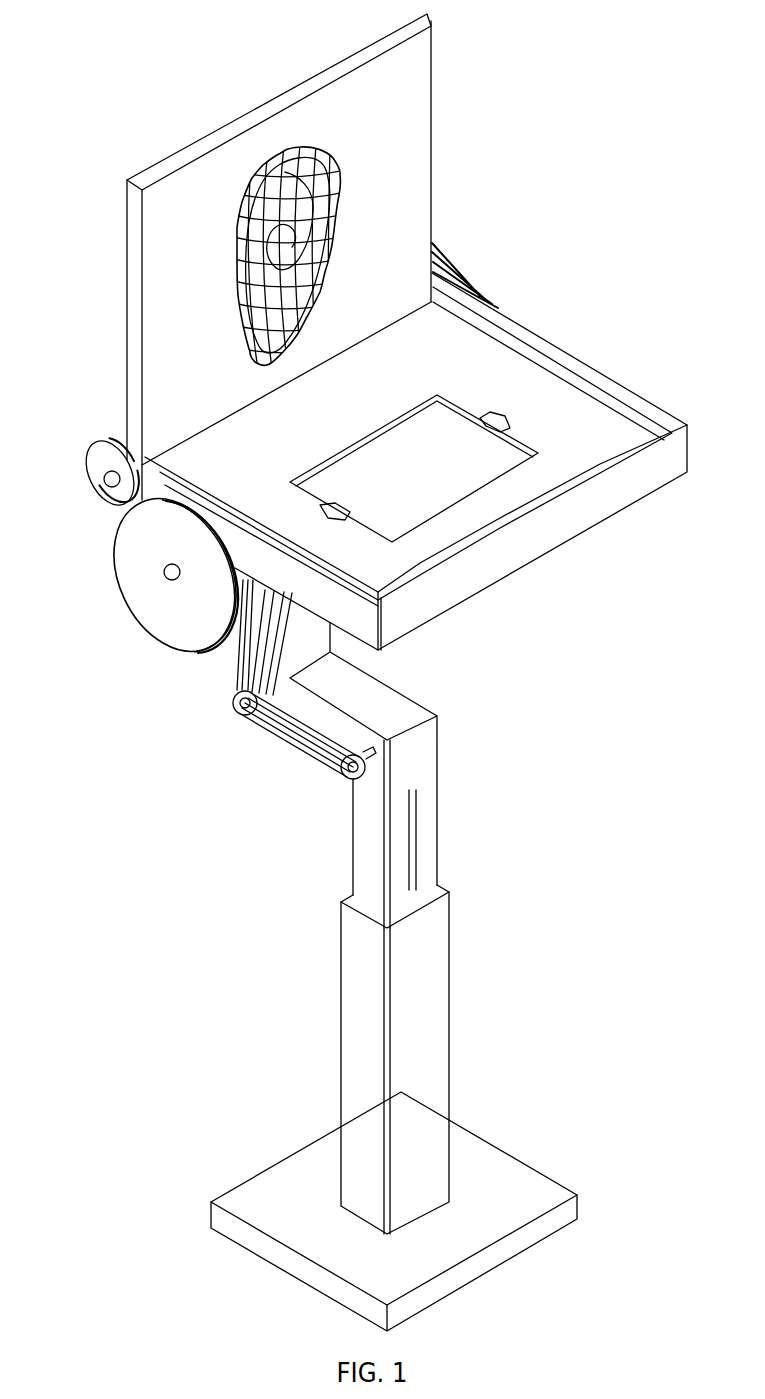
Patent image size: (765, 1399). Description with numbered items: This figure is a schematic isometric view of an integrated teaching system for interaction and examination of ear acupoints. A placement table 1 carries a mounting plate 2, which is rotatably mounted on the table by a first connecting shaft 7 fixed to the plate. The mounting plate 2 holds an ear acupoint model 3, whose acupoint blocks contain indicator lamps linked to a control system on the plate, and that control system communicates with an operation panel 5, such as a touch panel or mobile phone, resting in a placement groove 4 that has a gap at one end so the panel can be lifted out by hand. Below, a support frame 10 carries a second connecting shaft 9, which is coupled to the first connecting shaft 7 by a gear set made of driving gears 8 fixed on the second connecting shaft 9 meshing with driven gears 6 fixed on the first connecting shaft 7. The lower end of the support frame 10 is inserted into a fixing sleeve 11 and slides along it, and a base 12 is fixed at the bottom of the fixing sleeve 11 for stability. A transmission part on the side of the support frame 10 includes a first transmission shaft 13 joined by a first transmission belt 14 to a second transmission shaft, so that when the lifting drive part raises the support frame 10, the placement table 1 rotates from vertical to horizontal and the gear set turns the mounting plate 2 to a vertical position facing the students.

The placement table 1 is at (612, 496).
The mounting plate 2 is at (413, 137).
The ear acupoint model 3 is at (262, 182).
The placement groove 4 is at (508, 414).
The operation panel 5 is at (433, 392).
The driven gear 6 is at (105, 440).
The first connecting shaft 7 is at (103, 481).
The driving gear 8 is at (140, 571).
The second connecting shaft 9 is at (170, 581).
The support frame 10 is at (440, 723).
The fixing sleeve 11 is at (452, 1022).
The base 12 is at (468, 1236).
The first transmission shaft 13 is at (233, 708).
The first transmission belt 14 is at (294, 750).